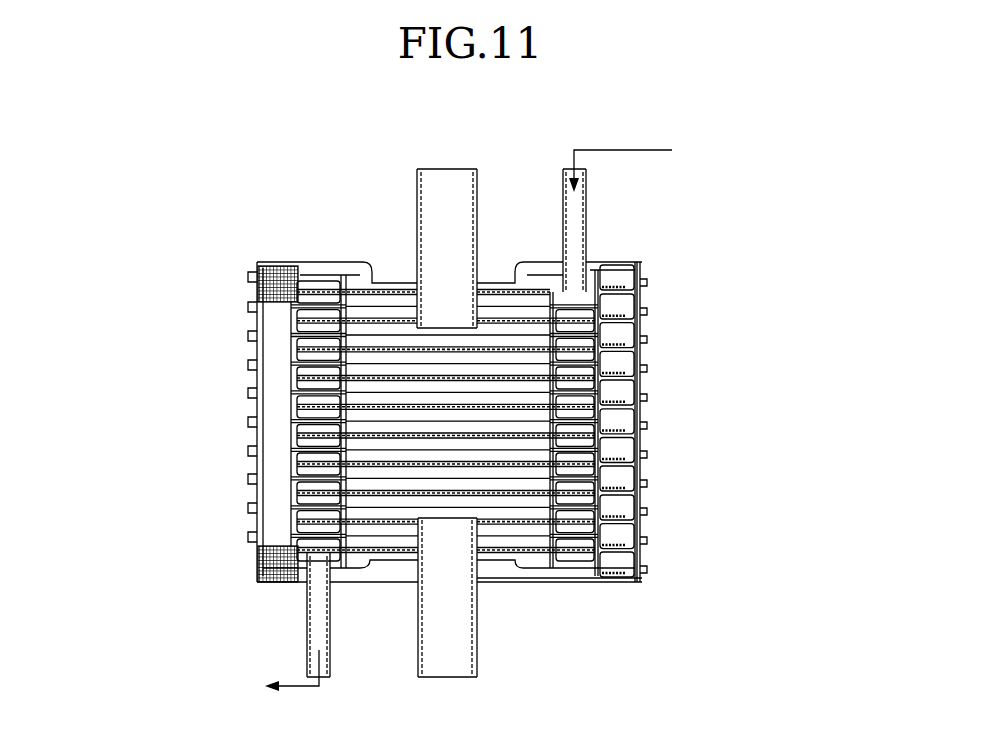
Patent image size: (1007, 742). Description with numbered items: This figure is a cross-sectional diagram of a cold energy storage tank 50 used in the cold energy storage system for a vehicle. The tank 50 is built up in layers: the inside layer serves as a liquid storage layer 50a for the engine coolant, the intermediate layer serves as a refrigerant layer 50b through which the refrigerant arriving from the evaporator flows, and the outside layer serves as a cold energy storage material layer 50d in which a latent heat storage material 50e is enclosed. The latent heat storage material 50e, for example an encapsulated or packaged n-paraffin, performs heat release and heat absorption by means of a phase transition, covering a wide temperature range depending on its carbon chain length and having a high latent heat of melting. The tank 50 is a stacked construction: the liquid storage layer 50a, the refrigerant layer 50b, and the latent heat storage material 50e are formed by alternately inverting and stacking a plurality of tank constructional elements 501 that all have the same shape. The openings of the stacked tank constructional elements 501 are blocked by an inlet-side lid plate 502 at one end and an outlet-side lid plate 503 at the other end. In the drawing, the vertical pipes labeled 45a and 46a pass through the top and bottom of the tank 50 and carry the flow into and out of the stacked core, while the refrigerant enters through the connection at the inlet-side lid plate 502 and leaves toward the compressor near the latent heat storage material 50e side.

The cold energy storage tank 50 is at (222, 176).
The high-pressure refrigerant outlet pipe 45a is at (447, 190).
The high-pressure refrigerant inlet pipe 46a is at (447, 655).
The inlet-side lid plate 502 is at (548, 262).
The latent heat storage material 50e is at (268, 560).
The liquid storage layer 50a is at (490, 515).
The refrigerant layer 50b is at (575, 548).
The cold energy storage material layer 50d is at (624, 515).
The tank constructional elements 501 is at (642, 432).
The outlet-side lid plate 503 is at (544, 590).